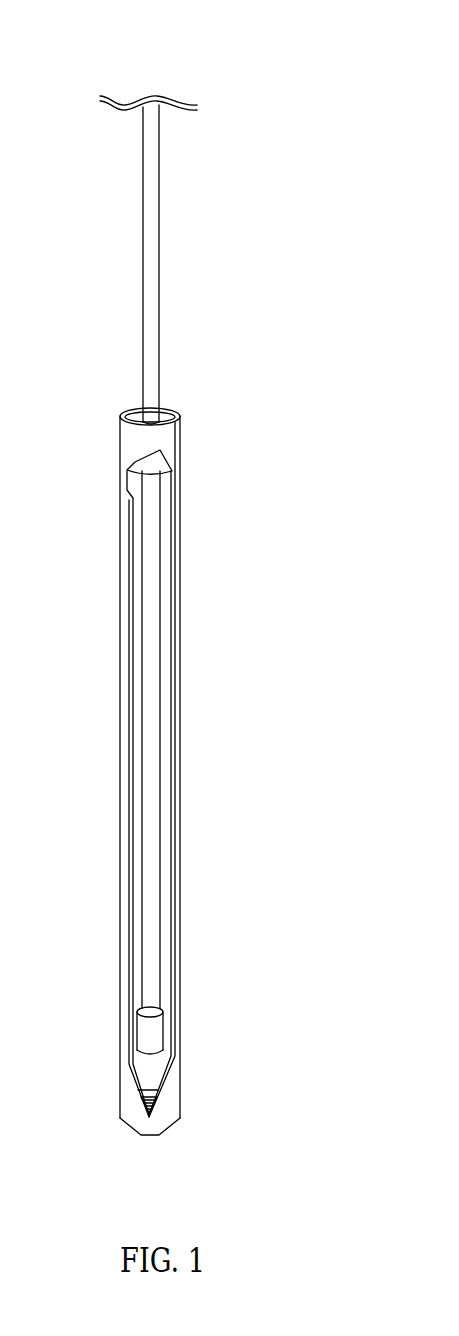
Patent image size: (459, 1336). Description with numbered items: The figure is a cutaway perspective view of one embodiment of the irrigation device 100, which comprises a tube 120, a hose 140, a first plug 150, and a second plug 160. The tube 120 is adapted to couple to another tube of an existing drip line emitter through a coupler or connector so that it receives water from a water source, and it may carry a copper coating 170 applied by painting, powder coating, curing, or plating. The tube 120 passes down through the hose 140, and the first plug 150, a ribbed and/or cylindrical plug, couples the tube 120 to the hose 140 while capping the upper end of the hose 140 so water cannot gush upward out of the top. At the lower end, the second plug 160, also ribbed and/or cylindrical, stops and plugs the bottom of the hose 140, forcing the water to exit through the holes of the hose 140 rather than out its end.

The irrigation device 100 is at (260, 60).
The tube 120 is at (143, 312).
The hose 140 is at (120, 869).
The first plug 150 is at (148, 462).
The second plug 160 is at (140, 1102).
The copper coating 170 is at (163, 1022).